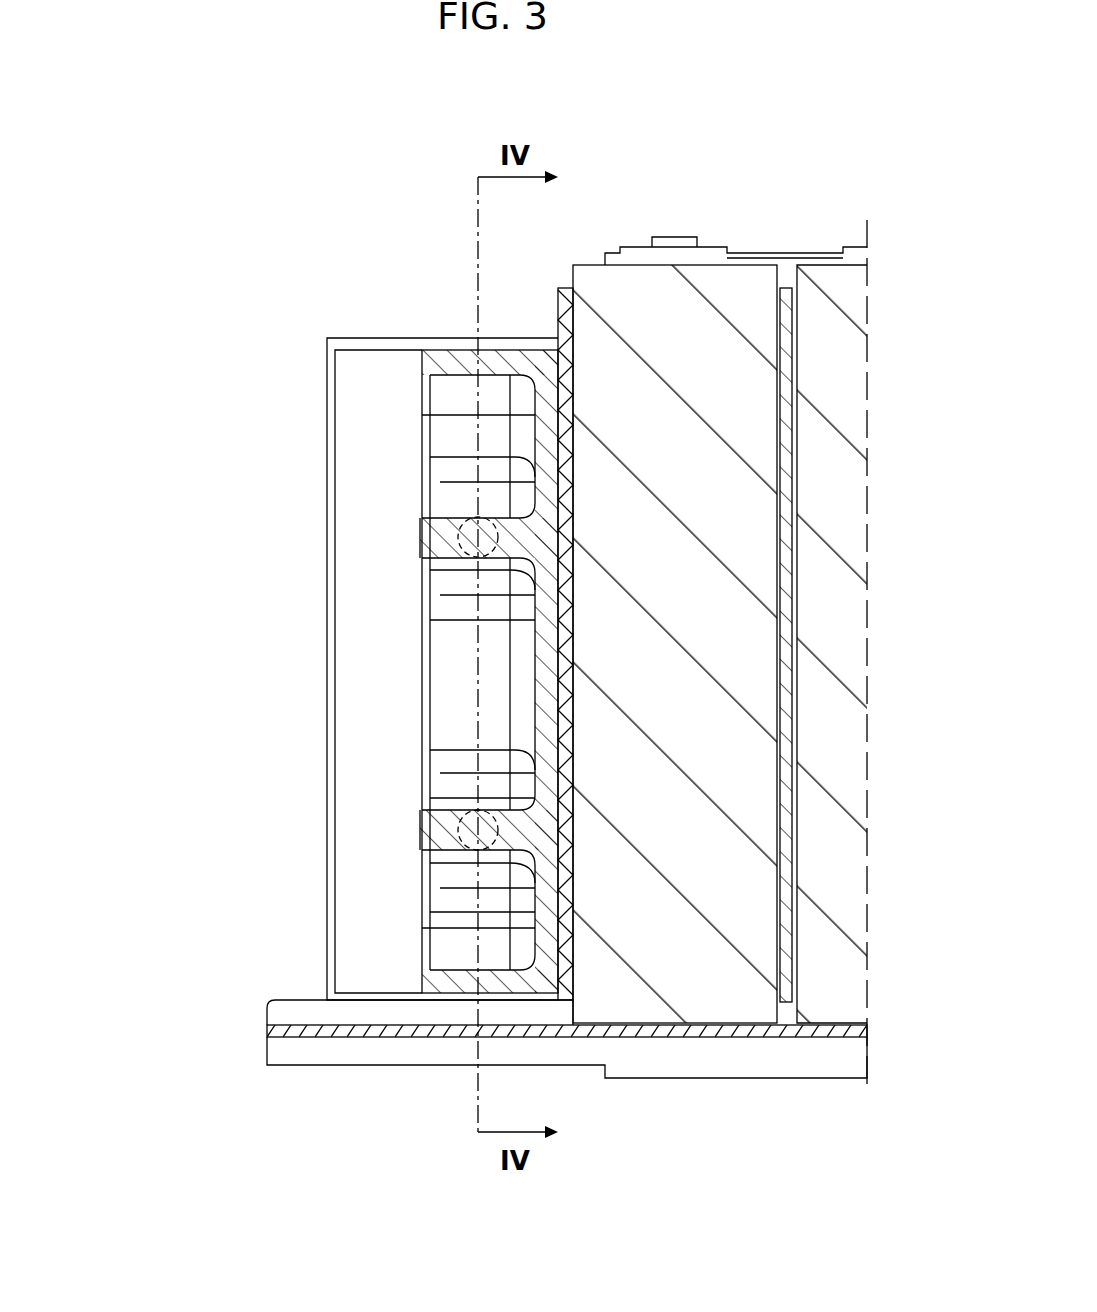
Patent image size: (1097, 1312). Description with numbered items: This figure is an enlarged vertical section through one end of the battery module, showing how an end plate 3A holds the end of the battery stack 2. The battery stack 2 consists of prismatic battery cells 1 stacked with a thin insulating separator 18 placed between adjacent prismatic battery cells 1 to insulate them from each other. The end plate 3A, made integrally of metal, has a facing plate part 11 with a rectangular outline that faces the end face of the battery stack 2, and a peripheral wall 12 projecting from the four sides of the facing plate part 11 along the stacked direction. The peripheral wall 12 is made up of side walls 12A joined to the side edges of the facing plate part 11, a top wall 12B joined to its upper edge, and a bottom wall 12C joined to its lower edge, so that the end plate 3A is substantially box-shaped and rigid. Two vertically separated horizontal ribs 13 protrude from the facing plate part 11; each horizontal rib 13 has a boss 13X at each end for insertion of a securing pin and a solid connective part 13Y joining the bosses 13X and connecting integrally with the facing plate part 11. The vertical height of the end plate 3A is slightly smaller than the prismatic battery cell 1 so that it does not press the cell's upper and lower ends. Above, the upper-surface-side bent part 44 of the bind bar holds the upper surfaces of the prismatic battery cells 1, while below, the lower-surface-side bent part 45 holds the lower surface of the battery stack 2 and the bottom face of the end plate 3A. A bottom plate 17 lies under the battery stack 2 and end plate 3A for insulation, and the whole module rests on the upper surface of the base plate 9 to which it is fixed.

The prismatic battery cell 1 is at (650, 312).
The battery stack 2 is at (820, 160).
The end plate 3A is at (442, 298).
The base plate 9 is at (557, 313).
The facing plate part 11 is at (547, 703).
The peripheral wall 12 is at (141, 285).
The side wall 12A is at (448, 665).
The top wall 12B is at (443, 362).
The bottom wall 12C is at (453, 978).
The horizontal rib 13 is at (251, 427).
The boss 13X is at (462, 492).
The connective part 13Y is at (440, 540).
The bottom plate 17 is at (583, 1030).
The separator 18 is at (777, 300).
The upper-surface-side bent part 44 is at (832, 255).
The lower-surface-side bent part 45 is at (737, 1068).